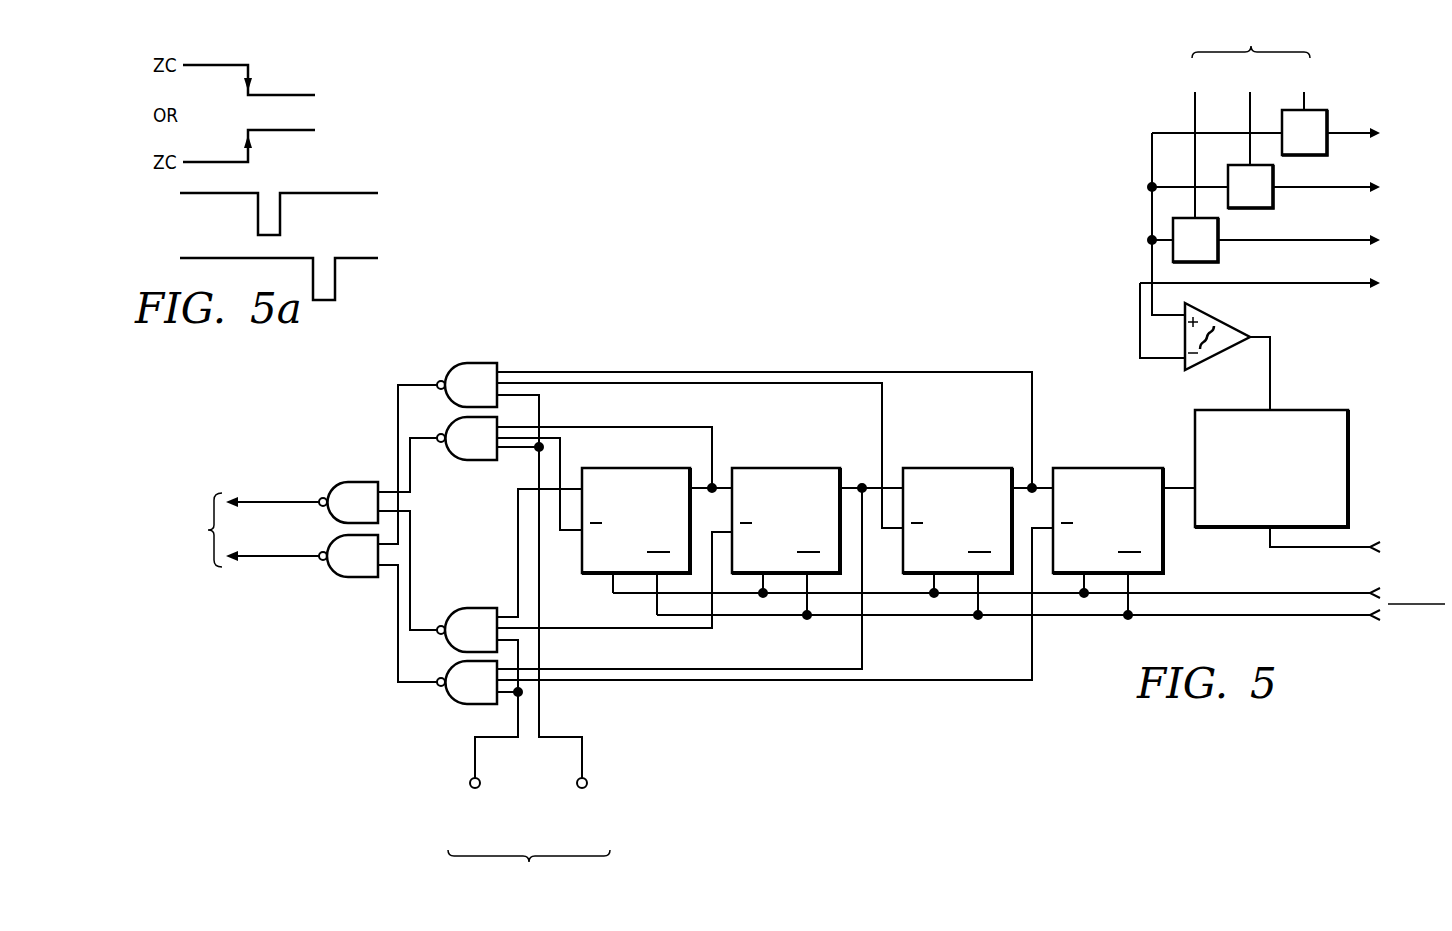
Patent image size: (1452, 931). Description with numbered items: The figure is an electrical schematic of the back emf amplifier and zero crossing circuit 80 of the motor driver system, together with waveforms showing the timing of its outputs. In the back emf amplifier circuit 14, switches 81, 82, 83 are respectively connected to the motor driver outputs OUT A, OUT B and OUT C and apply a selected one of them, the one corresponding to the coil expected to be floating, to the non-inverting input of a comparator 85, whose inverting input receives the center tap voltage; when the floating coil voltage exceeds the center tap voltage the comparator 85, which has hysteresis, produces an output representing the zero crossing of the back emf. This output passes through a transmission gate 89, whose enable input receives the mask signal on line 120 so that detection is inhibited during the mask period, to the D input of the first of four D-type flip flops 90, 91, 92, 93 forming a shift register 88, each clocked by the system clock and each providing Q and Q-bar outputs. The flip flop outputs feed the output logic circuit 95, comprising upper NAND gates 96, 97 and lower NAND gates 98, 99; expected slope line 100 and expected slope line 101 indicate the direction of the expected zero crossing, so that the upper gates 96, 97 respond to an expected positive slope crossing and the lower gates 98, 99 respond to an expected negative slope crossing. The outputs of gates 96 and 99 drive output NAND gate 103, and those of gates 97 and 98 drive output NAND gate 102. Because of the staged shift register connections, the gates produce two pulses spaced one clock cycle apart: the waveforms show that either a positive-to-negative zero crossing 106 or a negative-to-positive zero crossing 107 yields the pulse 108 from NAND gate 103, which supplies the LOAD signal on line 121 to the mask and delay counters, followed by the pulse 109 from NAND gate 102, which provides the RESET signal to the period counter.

In FIG. 5, the zero crossing circuit 80 is at (891, 172).
In FIG. 5, the back emf amplifier circuit 14 is at (1122, 266).
In FIG. 5, the switch 81 is at (1330, 143).
In FIG. 5, the switch 82 is at (1275, 197).
In FIG. 5, the switch 83 is at (1220, 250).
In FIG. 5, the comparator 85 is at (1243, 330).
In FIG. 5, the shift register 88 is at (1070, 410).
In FIG. 5, the transmission gate 89 is at (1303, 409).
In FIG. 5, the D-type flip flop 90 is at (1108, 467).
In FIG. 5, the D-type flip flop 91 is at (958, 467).
In FIG. 5, the D-type flip flop 92 is at (786, 467).
In FIG. 5, the D-type flip flop 93 is at (638, 467).
In FIG. 5, the output logic circuit 95 is at (483, 292).
In FIG. 5, the NAND gate 96 is at (475, 362).
In FIG. 5, the NAND gate 97 is at (485, 461).
In FIG. 5, the NAND gate 98 is at (478, 607).
In FIG. 5, the NAND gate 99 is at (450, 704).
In FIG. 5, the expected slope line 100 is at (587, 774).
In FIG. 5, the expected slope line 101 is at (470, 774).
In FIG. 5a, the output NAND gate 102 is at (235, 279).
In FIG. 5, the output NAND gate 102 is at (355, 481).
In FIG. 5a, the output NAND gate 103 is at (235, 188).
In FIG. 5, the output NAND gate 103 is at (302, 580).
In FIG. 5, the line 120 is at (1360, 546).
In FIG. 5, the line 121 is at (280, 557).
In FIG. 5a, the positive-to-negative zero crossing 106 is at (280, 94).
In FIG. 5a, the negative-to-positive zero crossing 107 is at (282, 131).
In FIG. 5a, the curve 108 is at (356, 192).
In FIG. 5a, the curve 109 is at (357, 261).